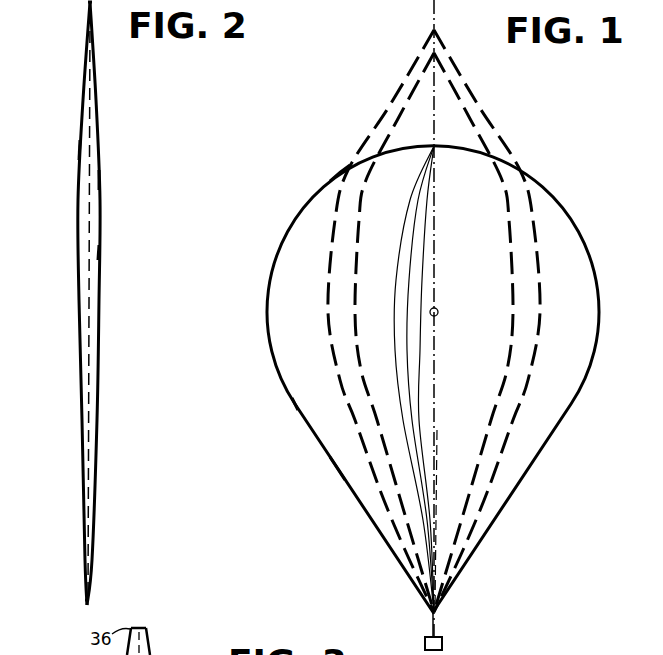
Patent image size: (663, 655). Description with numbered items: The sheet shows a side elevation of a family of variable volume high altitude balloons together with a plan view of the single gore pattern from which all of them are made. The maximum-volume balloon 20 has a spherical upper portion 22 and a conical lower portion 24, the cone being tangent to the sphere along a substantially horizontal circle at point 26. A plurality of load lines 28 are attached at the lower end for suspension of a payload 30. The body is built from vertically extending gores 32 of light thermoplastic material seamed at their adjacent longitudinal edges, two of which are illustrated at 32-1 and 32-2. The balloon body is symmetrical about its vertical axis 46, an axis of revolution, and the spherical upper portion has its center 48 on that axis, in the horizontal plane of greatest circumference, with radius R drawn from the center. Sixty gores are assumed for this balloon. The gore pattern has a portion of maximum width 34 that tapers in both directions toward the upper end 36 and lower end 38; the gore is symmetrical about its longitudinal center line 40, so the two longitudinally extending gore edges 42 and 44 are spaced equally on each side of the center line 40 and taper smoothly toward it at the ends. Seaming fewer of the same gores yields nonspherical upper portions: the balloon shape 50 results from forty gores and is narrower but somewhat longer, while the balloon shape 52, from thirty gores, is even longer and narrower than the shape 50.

In FIG. 1, the balloon 20 is at (283, 242).
In FIG. 1, the spherical upper portion 22 is at (335, 178).
In FIG. 1, the conical lower portion 24 is at (339, 471).
In FIG. 1, the point of tangency 26 is at (293, 420).
In FIG. 1, the load lines 28 is at (440, 612).
In FIG. 1, the payload 30 is at (443, 643).
In FIG. 2, the gores 32 is at (80, 318).
In FIG. 1, the gore 32-1 is at (403, 336).
In FIG. 1, the gore 32-2 is at (414, 364).
In FIG. 2, the portion of maximum width 34 is at (100, 253).
In FIG. 2, the upper end 36 is at (90, 3).
In FIG. 2, the lower end 38 is at (88, 605).
In FIG. 2, the center line 40 is at (88, 213).
In FIG. 2, the gore edge 42 is at (100, 176).
In FIG. 2, the gore edge 44 is at (82, 143).
In FIG. 1, the vertical axis 46 is at (436, 460).
In FIG. 1, the center 48 is at (439, 309).
In FIG. 1, the balloon shape 50 is at (328, 283).
In FIG. 1, the balloon shape 52 is at (340, 310).